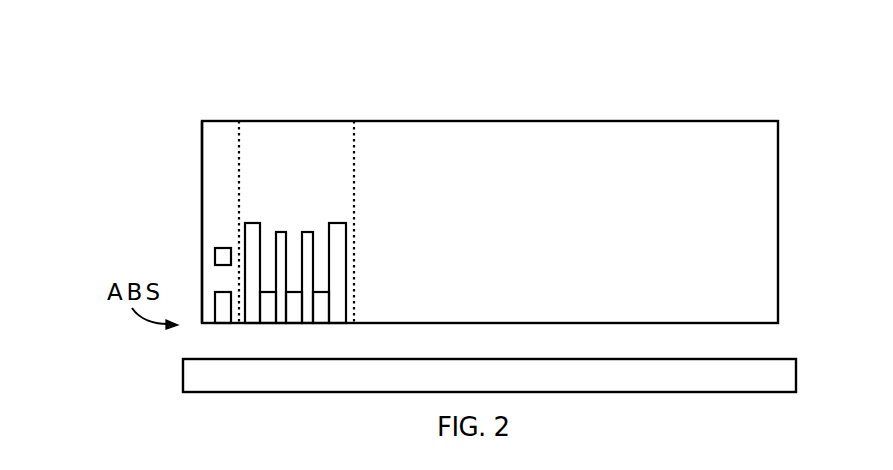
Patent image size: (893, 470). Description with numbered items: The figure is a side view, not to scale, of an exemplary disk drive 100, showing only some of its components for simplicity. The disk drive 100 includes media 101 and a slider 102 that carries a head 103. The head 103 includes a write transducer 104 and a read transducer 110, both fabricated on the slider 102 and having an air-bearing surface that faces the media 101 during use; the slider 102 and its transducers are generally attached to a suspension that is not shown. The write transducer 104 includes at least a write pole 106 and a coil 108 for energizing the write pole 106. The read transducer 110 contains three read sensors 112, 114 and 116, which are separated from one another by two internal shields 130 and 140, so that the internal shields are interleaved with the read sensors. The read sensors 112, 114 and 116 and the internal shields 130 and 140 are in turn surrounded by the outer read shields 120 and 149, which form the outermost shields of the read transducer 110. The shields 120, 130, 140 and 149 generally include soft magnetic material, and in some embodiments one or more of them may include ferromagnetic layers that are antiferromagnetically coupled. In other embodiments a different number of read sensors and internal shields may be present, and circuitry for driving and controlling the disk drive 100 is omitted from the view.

The disk drive 100 is at (496, 31).
The media 101 is at (183, 383).
The slider 102 is at (778, 188).
The head 103 is at (88, 196).
The write transducer 104 is at (202, 172).
The write pole 106 is at (215, 292).
The coil 108 is at (215, 248).
The read transducer 110 is at (354, 155).
The read sensor 112 is at (323, 324).
The read sensor 114 is at (296, 292).
The read sensor 116 is at (270, 324).
The read shield 120 is at (347, 240).
The shield 130 is at (281, 232).
The shield 140 is at (307, 232).
The read shield 149 is at (252, 223).